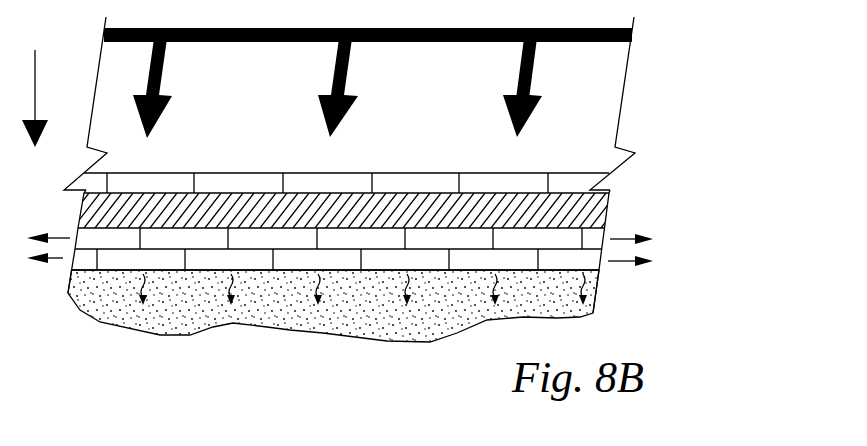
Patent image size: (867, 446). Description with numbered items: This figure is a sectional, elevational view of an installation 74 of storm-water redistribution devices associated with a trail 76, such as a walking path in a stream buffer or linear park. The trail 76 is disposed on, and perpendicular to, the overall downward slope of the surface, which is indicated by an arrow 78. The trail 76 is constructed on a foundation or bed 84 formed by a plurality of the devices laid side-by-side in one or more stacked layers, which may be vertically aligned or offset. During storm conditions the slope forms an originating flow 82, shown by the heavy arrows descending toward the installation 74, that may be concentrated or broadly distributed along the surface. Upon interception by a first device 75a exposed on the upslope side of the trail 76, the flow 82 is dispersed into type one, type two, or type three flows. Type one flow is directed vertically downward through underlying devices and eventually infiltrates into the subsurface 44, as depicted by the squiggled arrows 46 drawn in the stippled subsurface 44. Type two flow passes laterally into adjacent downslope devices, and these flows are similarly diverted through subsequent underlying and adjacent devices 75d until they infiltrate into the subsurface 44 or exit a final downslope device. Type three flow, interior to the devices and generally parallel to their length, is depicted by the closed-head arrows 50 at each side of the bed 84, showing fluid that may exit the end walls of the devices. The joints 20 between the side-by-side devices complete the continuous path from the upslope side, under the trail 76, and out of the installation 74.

The joints between tiles 20 is at (372, 185).
The subsurface 44 is at (465, 318).
The squiggled arrows 46 is at (320, 284).
The closed-head arrows 50 is at (58, 259).
The installation 74 is at (691, 204).
The first device 75a is at (577, 173).
The subsequent underlying and adjacent devices 75d is at (127, 250).
The trail 76 is at (255, 200).
The arrow depicting overall downward slope 78 is at (35, 87).
The originating flow 82 is at (333, 82).
The bed 84 is at (704, 268).